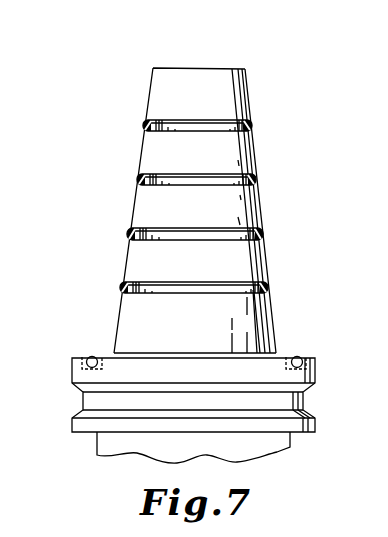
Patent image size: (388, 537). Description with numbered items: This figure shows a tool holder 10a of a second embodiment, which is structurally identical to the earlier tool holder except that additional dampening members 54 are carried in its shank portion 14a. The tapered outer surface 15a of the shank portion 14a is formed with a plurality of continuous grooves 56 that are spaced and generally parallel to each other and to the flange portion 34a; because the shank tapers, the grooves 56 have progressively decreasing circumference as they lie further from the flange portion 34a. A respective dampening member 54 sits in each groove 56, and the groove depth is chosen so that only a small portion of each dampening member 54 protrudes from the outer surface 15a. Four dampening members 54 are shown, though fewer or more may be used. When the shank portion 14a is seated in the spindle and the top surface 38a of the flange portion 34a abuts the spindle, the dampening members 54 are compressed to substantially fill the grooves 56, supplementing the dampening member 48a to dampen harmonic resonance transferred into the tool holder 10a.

The tool holder 10a is at (264, 79).
The shank portion 14a is at (130, 122).
The tapered outer surface 15a is at (270, 315).
The dampening members 54 is at (260, 232).
The grooves 56 is at (167, 292).
The flange portion 34a is at (68, 346).
The top surface 38a is at (107, 358).
The dampening member 48a is at (298, 357).